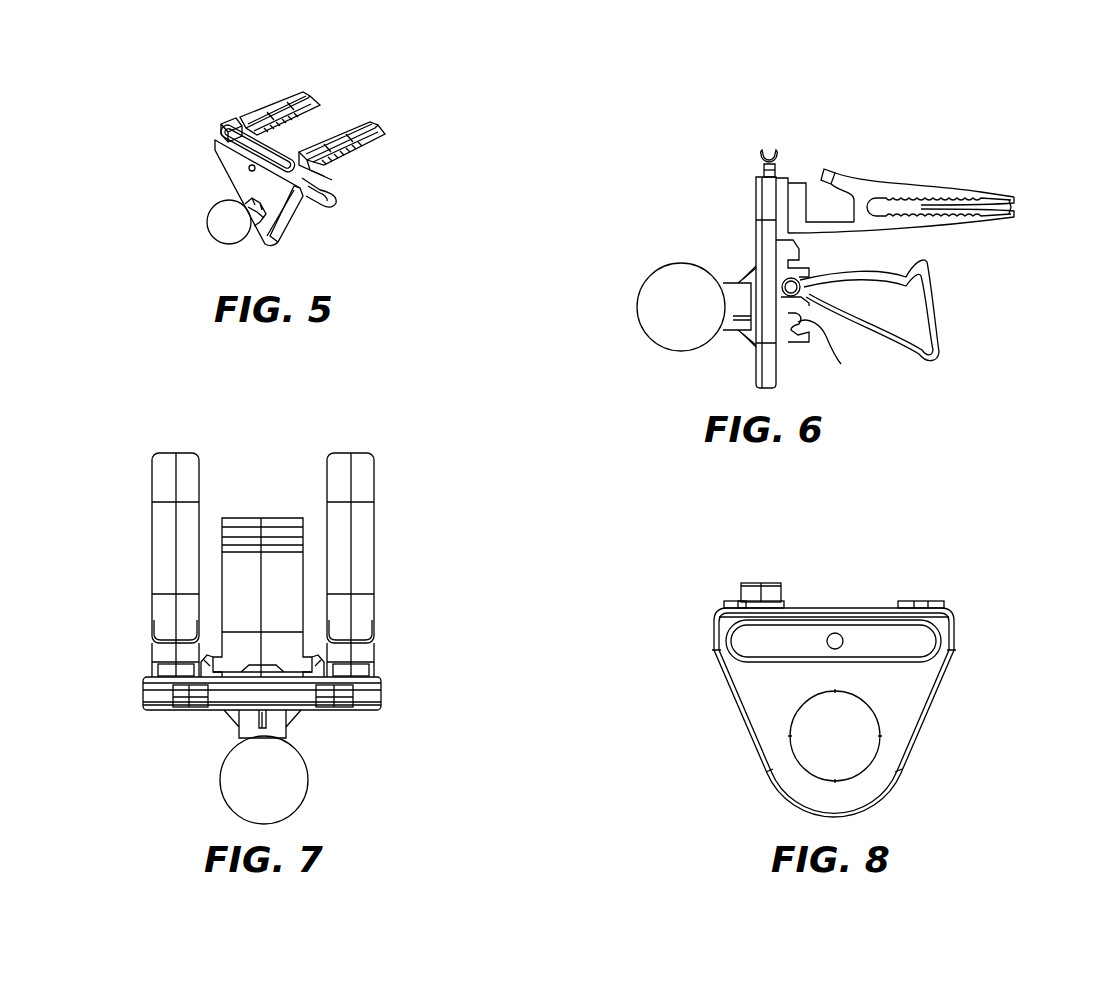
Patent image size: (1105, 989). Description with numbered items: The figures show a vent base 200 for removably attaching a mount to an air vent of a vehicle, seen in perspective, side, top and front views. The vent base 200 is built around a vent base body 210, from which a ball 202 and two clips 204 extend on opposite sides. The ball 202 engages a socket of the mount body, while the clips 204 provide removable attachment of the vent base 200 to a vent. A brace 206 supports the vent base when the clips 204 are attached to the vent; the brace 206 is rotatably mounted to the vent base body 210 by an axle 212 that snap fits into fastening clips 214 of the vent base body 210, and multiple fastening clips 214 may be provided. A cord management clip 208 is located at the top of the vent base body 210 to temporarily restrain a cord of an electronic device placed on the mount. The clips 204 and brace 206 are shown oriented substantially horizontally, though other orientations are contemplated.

In FIG. 5, the vent base 200 is at (156, 150).
In FIG. 6, the vent base 200 is at (930, 112).
In FIG. 7, the vent base 200 is at (495, 604).
In FIG. 8, the vent base 200 is at (978, 626).
In FIG. 5, the ball 202 is at (218, 230).
In FIG. 6, the ball 202 is at (674, 262).
In FIG. 7, the ball 202 is at (307, 784).
In FIG. 8, the ball 202 is at (878, 752).
In FIG. 5, the clip 204 is at (320, 88).
In FIG. 6, the clip 204 is at (985, 190).
In FIG. 7, the clip 204 is at (160, 556).
In FIG. 5, the brace 206 is at (324, 204).
In FIG. 6, the brace 206 is at (930, 324).
In FIG. 7, the brace 206 is at (259, 518).
In FIG. 5, the cord management clip 208 is at (228, 124).
In FIG. 6, the cord management clip 208 is at (764, 148).
In FIG. 7, the cord management clip 208 is at (185, 710).
In FIG. 8, the cord management clip 208 is at (748, 580).
In FIG. 5, the vent base body 210 is at (231, 184).
In FIG. 6, the vent base body 210 is at (755, 208).
In FIG. 7, the vent base body 210 is at (378, 704).
In FIG. 8, the vent base body 210 is at (834, 709).
In FIG. 6, the axle 212 is at (806, 284).
In FIG. 6, the fastening clips 214 is at (805, 323).